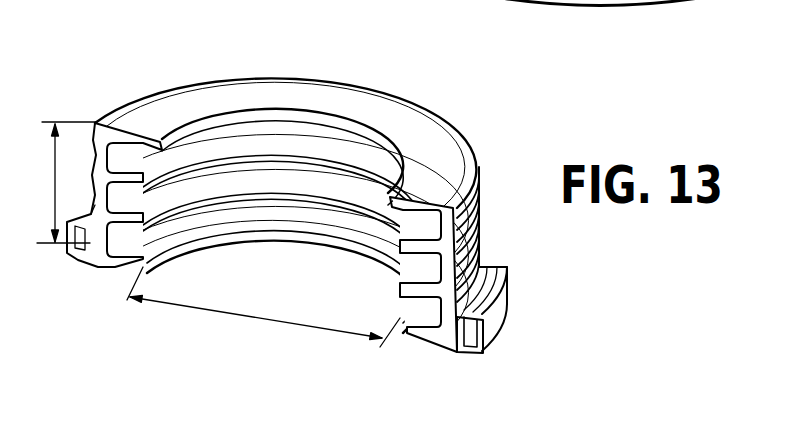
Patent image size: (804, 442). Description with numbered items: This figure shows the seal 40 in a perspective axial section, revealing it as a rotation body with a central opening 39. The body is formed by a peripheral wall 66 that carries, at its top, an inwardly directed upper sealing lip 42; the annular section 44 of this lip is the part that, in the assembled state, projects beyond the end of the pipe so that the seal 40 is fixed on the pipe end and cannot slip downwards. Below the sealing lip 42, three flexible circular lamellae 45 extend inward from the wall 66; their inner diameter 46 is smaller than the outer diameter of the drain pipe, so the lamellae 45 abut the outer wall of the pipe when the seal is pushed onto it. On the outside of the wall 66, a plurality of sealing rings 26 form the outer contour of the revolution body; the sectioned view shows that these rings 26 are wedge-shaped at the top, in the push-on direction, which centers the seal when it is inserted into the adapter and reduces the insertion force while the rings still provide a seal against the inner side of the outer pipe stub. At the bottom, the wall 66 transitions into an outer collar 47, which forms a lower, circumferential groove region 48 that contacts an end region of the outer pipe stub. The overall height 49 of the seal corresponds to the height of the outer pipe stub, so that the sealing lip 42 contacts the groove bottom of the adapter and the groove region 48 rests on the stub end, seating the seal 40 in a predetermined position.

The seal 40 is at (160, 73).
The opening 39 is at (235, 78).
The upper sealing lip 42 is at (275, 115).
The annular section 44 is at (353, 110).
The flexible lamellae 45 is at (323, 192).
The inner diameter 46 is at (263, 307).
The outer collar 47 is at (490, 323).
The groove region 48 is at (490, 283).
The height 49 is at (57, 182).
The sealing rings 26 is at (484, 222).
The peripheral wall 66 is at (447, 316).